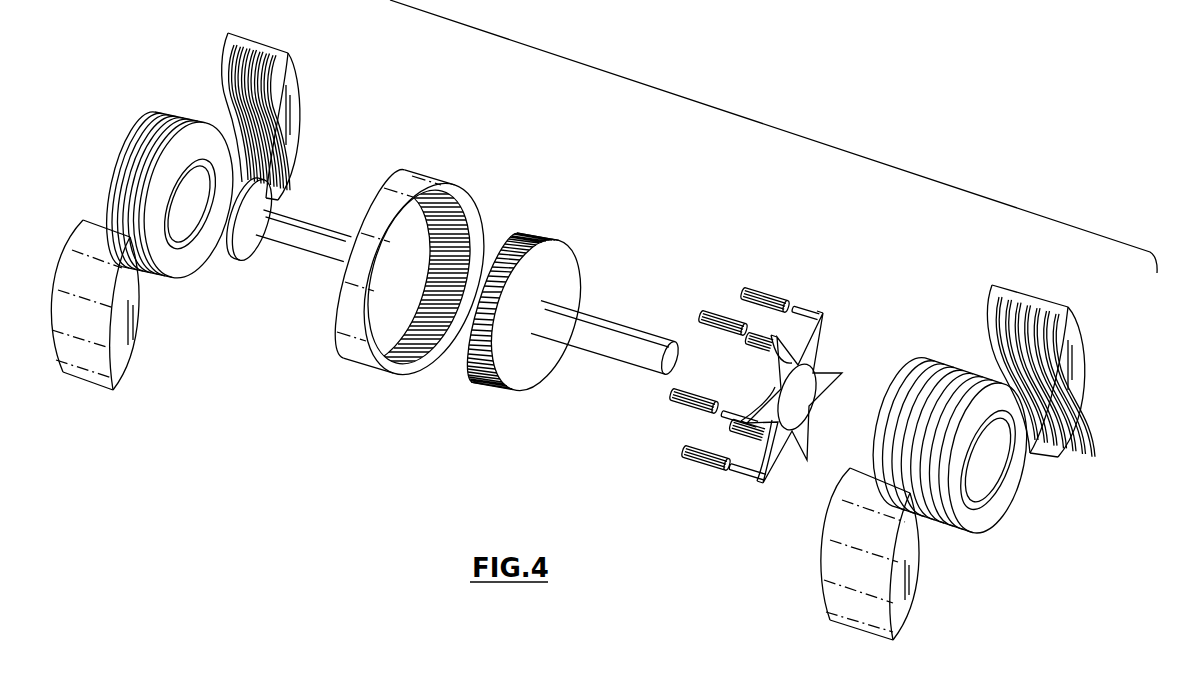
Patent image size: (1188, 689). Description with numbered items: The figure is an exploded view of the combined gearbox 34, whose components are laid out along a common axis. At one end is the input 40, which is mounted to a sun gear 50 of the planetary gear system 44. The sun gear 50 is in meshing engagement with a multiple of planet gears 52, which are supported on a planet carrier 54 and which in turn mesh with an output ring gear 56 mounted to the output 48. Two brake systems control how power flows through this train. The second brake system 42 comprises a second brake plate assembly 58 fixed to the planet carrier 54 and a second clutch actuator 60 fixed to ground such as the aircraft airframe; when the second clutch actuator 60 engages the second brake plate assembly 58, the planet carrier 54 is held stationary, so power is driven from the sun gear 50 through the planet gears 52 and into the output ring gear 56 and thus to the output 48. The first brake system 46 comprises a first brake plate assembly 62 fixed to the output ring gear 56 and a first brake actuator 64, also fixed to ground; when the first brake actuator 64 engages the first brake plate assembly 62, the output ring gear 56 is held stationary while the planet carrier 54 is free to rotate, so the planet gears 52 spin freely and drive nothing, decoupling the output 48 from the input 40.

The combined gearbox 34 is at (722, 110).
The input 40 is at (625, 298).
The second brake system 42 is at (998, 461).
The planetary gear system 44 is at (778, 364).
The first brake system 46 is at (217, 219).
The output 48 is at (413, 268).
The sun gear 50 is at (575, 248).
The planet gears 52 is at (722, 315).
The planet carrier 54 is at (828, 336).
The output ring gear 56 is at (423, 375).
The second brake plate assembly 58 is at (966, 538).
The second clutch actuator 60 is at (1038, 293).
The first brake plate assembly 62 is at (172, 283).
The first brake actuator 64 is at (268, 42).